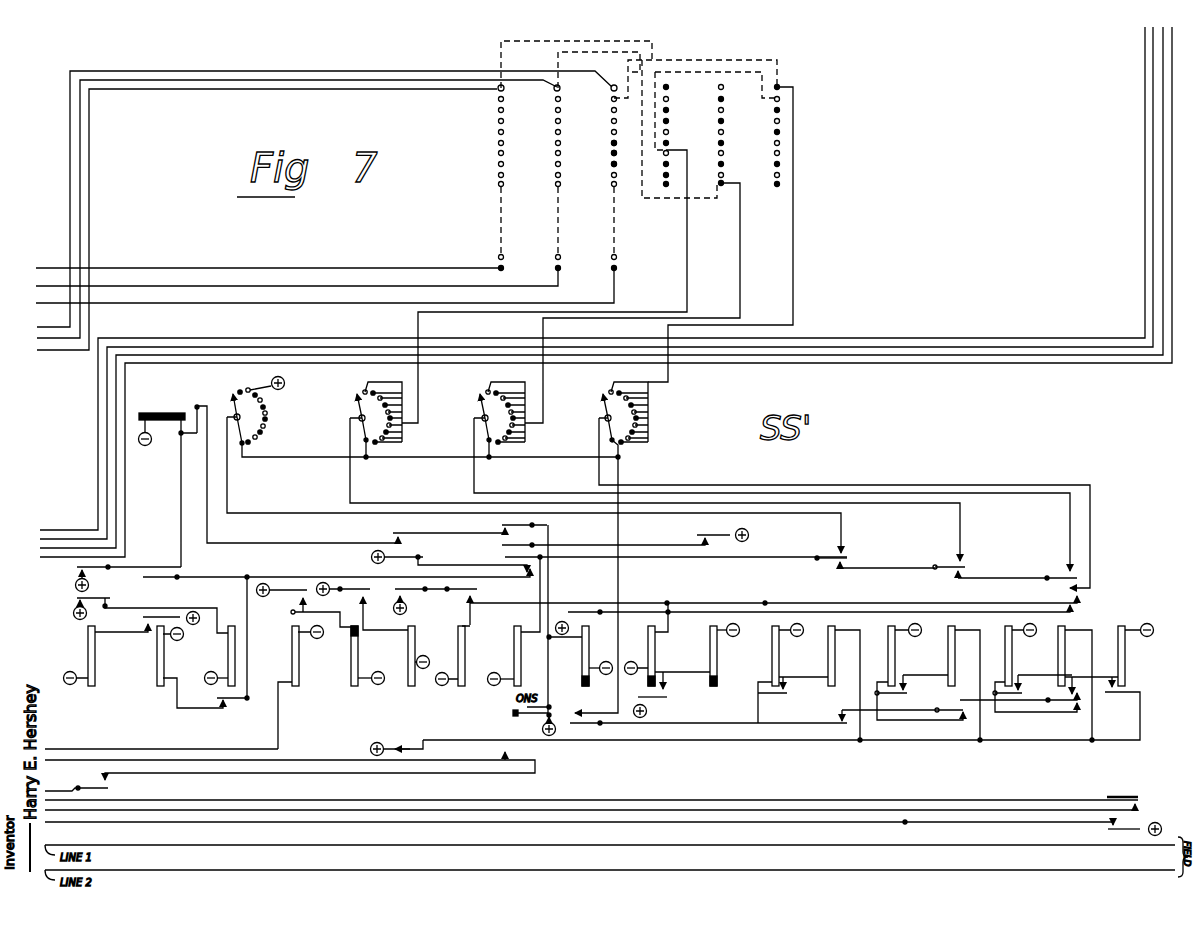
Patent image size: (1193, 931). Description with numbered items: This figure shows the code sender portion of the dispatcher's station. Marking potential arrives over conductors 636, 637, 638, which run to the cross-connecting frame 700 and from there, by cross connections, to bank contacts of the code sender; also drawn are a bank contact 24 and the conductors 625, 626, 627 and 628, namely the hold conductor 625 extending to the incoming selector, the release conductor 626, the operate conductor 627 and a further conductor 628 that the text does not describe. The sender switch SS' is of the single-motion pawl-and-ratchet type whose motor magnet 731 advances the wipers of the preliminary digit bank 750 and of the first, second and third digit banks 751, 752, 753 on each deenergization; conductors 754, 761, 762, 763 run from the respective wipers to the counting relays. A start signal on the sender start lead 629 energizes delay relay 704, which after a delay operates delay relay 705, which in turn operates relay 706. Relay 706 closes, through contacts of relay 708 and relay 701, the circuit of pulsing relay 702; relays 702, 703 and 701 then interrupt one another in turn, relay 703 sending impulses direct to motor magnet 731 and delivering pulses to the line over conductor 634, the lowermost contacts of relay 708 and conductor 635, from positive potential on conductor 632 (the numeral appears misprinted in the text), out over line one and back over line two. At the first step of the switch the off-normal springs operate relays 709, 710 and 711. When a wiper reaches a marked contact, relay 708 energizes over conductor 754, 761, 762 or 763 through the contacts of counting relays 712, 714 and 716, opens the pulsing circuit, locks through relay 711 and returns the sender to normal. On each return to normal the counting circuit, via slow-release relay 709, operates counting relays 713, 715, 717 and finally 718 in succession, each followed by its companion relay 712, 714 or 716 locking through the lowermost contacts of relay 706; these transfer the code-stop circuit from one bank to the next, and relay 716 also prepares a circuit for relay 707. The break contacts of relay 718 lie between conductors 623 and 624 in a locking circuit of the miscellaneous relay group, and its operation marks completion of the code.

The cross-connecting frame 700 is at (600, 41).
The contact 24 is at (325, 283).
The hold conductor 625 is at (1145, 44).
The release conductor 626 is at (1163, 79).
The operate conductor 627 is at (1172, 96).
The conductor 628 is at (1153, 61).
The conductor 636 is at (89, 190).
The conductor 637 is at (80, 170).
The conductor 638 is at (70, 152).
The motor magnet 731 is at (176, 398).
The preliminary digit bank 750 is at (422, 417).
The first digit bank 751 is at (412, 419).
The second-digit bank 752 is at (537, 419).
The third-digit bank 753 is at (645, 547).
The conductor 754 is at (243, 513).
The conductor 761 is at (372, 503).
The conductor 762 is at (508, 493).
The conductor 763 is at (668, 485).
The relay 701 is at (232, 624).
The pulsing relay 702 is at (163, 659).
The pulsing relay 703 is at (95, 659).
The delay relay 704 is at (298, 659).
The delay relay 705 is at (358, 659).
The relay 706 is at (418, 640).
The relay 707 is at (465, 648).
The relay 708 is at (514, 664).
The relay 709 is at (582, 664).
The relay 710 is at (655, 650).
The relay 711 is at (717, 650).
The relay 712 is at (835, 650).
The counting relay 713 is at (779, 650).
The counting relay 714 is at (955, 650).
The relay 715 is at (895, 650).
The relay 716 is at (1065, 650).
The relay 717 is at (1012, 650).
The sender relay 718 is at (1125, 650).
The sender start lead 629 is at (47, 750).
The conductor 634 is at (45, 760).
The conductor 635 is at (110, 788).
The conductor 624 is at (172, 801).
The conductor 623 is at (225, 810).
The conductor 632 is at (45, 822).